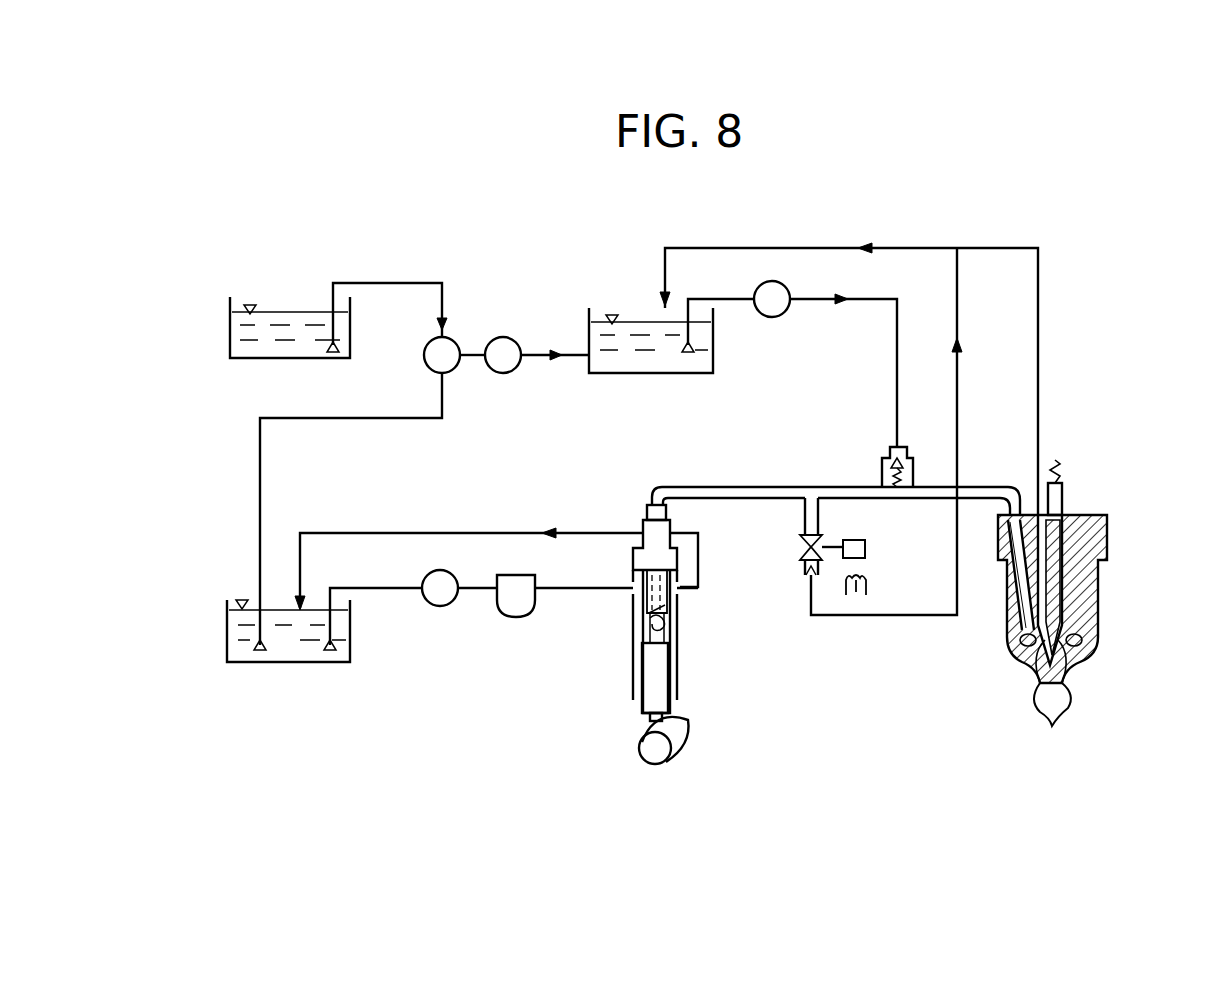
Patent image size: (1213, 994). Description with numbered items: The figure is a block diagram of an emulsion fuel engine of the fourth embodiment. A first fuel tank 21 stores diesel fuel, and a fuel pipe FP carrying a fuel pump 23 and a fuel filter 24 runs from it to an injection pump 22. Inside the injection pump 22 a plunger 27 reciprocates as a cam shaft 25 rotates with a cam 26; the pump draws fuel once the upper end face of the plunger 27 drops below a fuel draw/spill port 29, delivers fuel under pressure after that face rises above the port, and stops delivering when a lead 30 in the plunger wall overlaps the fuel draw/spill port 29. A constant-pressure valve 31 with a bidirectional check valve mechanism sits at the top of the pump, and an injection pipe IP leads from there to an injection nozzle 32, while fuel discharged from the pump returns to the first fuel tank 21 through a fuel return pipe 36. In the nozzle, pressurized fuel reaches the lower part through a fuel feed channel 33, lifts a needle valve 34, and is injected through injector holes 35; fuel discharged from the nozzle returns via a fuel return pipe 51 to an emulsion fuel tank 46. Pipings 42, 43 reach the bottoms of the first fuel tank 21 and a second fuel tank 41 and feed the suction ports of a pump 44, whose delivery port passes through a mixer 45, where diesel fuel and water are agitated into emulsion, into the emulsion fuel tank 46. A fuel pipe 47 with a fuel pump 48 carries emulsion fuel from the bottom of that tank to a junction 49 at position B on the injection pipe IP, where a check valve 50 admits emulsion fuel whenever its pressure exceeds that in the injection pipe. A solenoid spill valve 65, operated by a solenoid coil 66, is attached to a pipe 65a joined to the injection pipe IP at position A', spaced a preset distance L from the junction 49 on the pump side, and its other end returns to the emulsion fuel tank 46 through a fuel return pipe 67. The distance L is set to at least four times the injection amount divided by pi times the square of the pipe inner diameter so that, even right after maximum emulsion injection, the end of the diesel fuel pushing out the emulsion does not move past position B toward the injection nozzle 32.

The first fuel tank 21 is at (288, 662).
The injection pump 22 is at (630, 688).
The fuel pump 23 is at (434, 606).
The fuel filter 24 is at (504, 617).
The cam shaft 25 is at (648, 765).
The cam 26 is at (682, 738).
The plunger 27 is at (660, 680).
The fuel draw/spill port 29 is at (680, 600).
The lead 30 is at (662, 628).
The constant-pressure valve 31 is at (645, 510).
The injection nozzle 32 is at (1098, 600).
The fuel feed channel 33 is at (1018, 595).
The needle valve 34 is at (1078, 550).
The injector holes 35 is at (1052, 726).
The fuel return pipe 36 is at (482, 533).
The second fuel tank 41 is at (230, 346).
The piping 42 is at (356, 418).
The piping 43 is at (400, 283).
The pump 44 is at (452, 340).
The mixer 45 is at (510, 338).
The emulsion fuel tank 46 is at (630, 373).
The fuel pipe 47 is at (880, 299).
The fuel pump 48 is at (777, 317).
The junction 49 is at (908, 472).
The check valve 50 is at (890, 455).
The fuel return pipe 51 is at (1040, 305).
The solenoid spill valve 65 is at (800, 547).
The pipe 65a is at (805, 515).
The solenoid coil 66 is at (870, 587).
The fuel return pipe 67 is at (882, 620).
The injection pipe IP is at (710, 487).
The fuel pipe FP is at (575, 595).
The preset distance L is at (878, 508).
The position B is at (900, 505).
The position A' is at (780, 448).